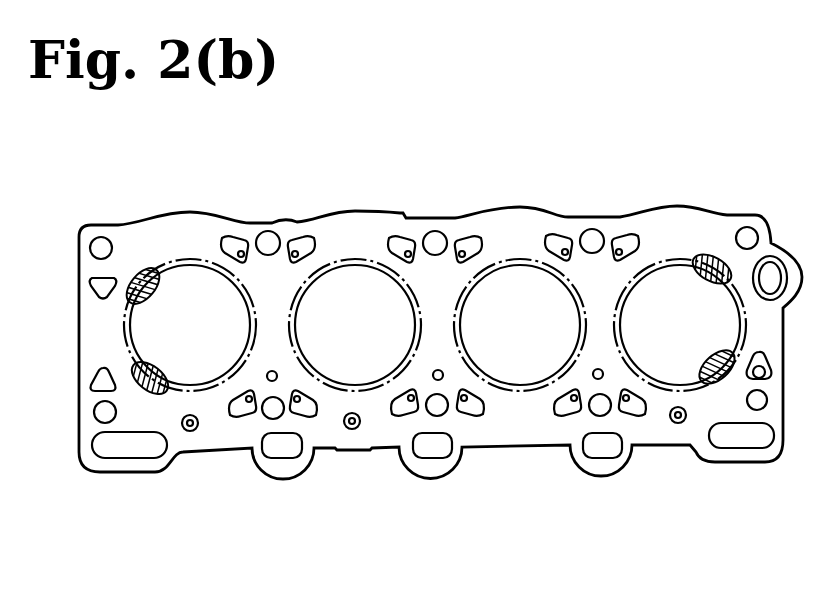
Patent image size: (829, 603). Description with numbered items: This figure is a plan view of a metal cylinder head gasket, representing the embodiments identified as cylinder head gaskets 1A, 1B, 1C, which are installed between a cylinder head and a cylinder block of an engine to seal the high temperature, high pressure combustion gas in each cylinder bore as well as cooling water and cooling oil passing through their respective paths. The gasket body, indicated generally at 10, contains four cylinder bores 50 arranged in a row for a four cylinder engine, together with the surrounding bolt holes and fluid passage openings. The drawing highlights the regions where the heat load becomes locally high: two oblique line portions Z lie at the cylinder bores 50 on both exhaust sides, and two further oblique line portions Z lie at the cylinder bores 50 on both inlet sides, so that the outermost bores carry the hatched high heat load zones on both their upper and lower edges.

The cylinder head gasket 1A is at (465, 190).
The cylinder head gasket 1B is at (440, 342).
The cylinder head gasket 1C is at (440, 342).
The gasket outer periphery 10 is at (350, 210).
The cylinder bore 50 is at (538, 280).
The oblique line portion Z is at (142, 262).